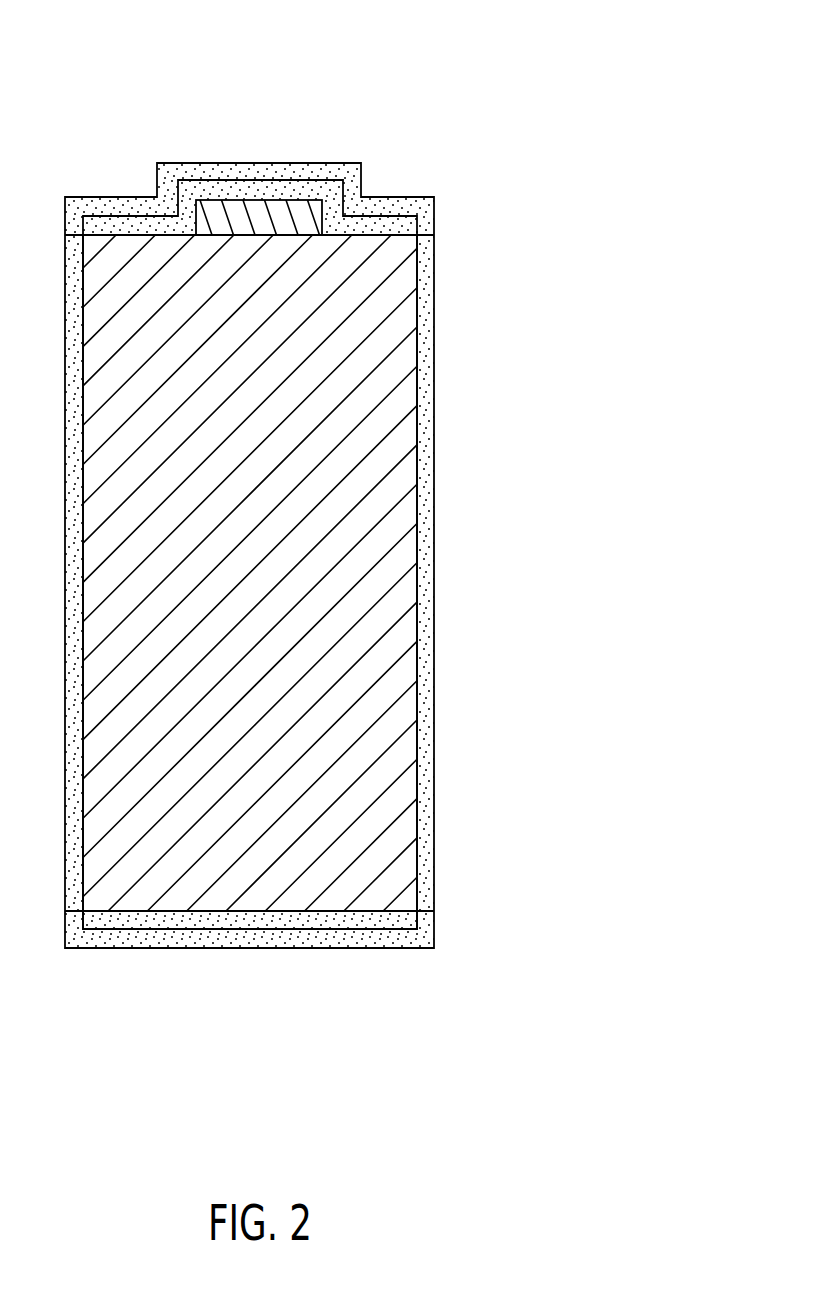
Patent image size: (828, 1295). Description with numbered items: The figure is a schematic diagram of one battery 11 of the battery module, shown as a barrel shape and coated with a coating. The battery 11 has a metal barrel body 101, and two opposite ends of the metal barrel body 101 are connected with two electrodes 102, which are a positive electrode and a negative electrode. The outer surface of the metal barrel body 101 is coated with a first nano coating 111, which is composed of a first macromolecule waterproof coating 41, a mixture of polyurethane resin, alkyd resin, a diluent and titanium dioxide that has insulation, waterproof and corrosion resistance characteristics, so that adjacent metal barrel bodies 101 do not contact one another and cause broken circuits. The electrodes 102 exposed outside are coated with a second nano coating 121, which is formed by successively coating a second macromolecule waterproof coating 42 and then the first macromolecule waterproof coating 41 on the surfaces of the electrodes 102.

The metal barrel body 101 is at (371, 555).
The battery 11 is at (376, 447).
The first nano coating 111 is at (584, 577).
The electrode 102 is at (306, 555).
The second nano coating 121 is at (306, 555).
The first macromolecule waterproof coating 41 is at (233, 170).
The second macromolecule waterproof coating 42 is at (286, 197).